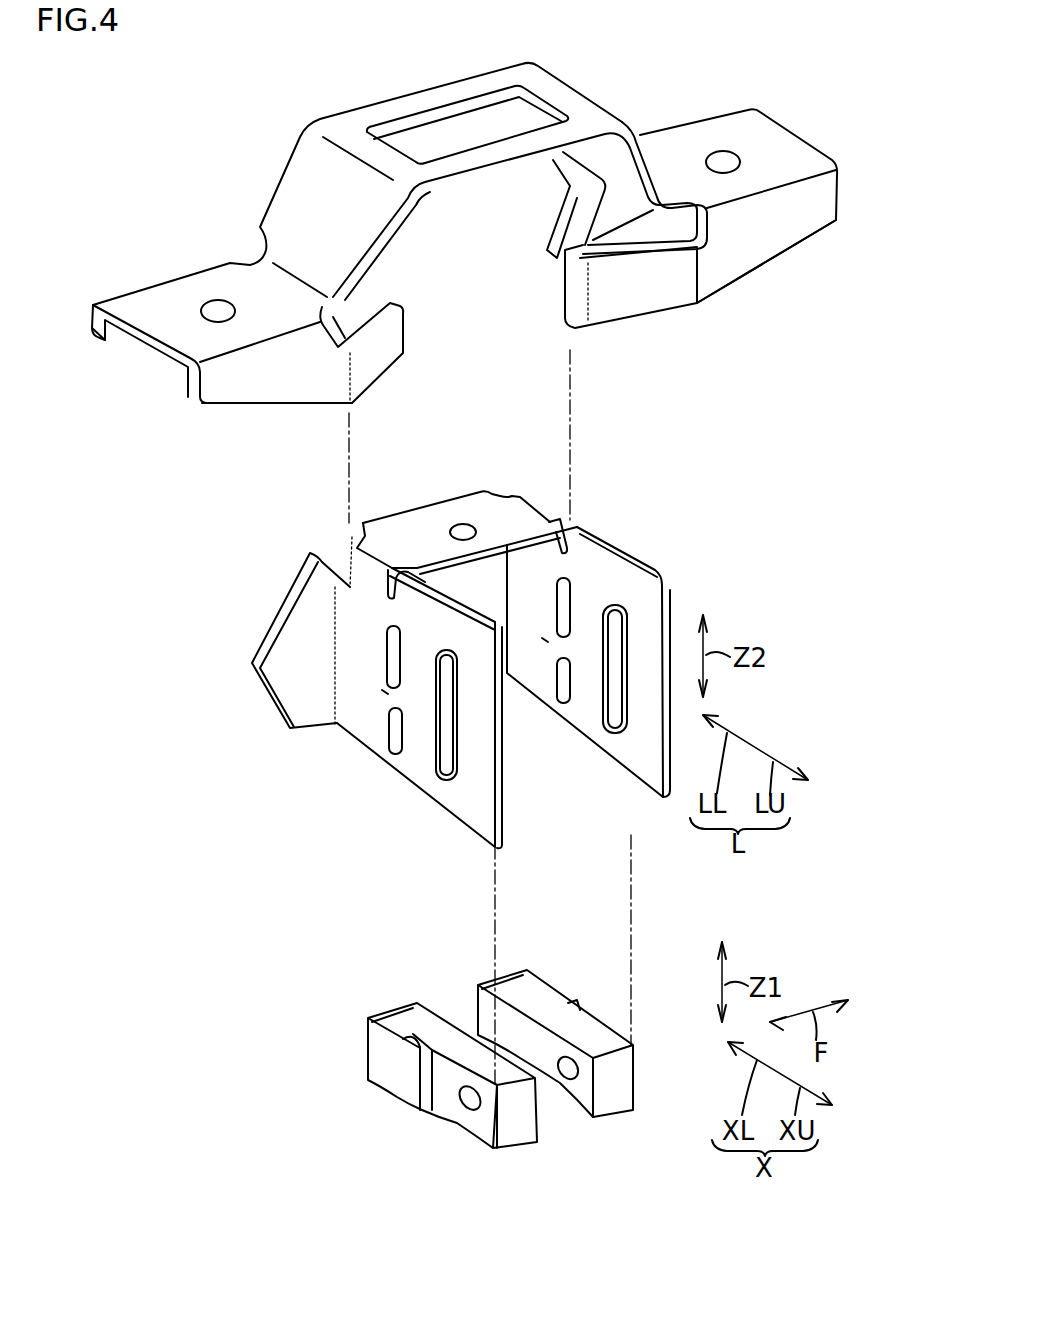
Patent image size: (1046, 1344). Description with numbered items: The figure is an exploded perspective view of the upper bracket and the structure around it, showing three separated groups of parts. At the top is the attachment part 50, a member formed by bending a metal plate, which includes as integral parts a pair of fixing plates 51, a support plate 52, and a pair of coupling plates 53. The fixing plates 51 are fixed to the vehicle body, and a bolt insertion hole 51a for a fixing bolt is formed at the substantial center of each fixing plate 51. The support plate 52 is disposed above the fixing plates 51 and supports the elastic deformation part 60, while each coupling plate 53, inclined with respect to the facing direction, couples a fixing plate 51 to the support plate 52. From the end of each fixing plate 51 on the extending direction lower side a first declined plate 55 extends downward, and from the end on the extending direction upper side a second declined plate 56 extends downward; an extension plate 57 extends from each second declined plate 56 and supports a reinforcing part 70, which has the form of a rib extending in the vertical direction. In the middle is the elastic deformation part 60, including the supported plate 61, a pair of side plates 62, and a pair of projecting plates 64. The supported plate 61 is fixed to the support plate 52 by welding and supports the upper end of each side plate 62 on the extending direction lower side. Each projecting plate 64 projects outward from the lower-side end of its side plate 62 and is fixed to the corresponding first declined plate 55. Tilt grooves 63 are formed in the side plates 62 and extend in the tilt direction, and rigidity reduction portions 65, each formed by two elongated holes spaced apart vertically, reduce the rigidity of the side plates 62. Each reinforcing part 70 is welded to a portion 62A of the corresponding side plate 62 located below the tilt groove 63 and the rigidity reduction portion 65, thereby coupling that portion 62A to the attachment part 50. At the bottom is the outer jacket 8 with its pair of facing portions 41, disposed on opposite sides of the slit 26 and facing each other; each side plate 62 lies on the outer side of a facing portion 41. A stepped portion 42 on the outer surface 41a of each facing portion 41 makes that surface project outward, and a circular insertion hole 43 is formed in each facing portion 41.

The attachment part 50 is at (476, 74).
The support plate 52 is at (404, 108).
The coupling plates 53 is at (310, 192).
The fixing plates 51 is at (150, 293).
The bolt insertion hole 51a is at (218, 304).
The first declined plates 55 is at (112, 336).
The second declined plates 56 is at (216, 402).
The extension plate 57 is at (372, 386).
The reinforcing parts 70 is at (394, 300).
The elastic deformation part 60 is at (476, 488).
The supported plate 61 is at (432, 516).
The projecting plates 64 is at (557, 504).
The side plates 62 is at (472, 830).
The portion of side plate 62A is at (384, 692).
The rigidity reduction portions 65 is at (400, 643).
The tilt grooves 63 is at (446, 780).
The slit 26 is at (467, 1015).
The outer jacket 8 is at (637, 1130).
The outer surface 41a is at (390, 1078).
The stepped portions 42 is at (402, 1040).
The insertion hole 43 is at (470, 1106).
The facing portions 41 is at (518, 1136).